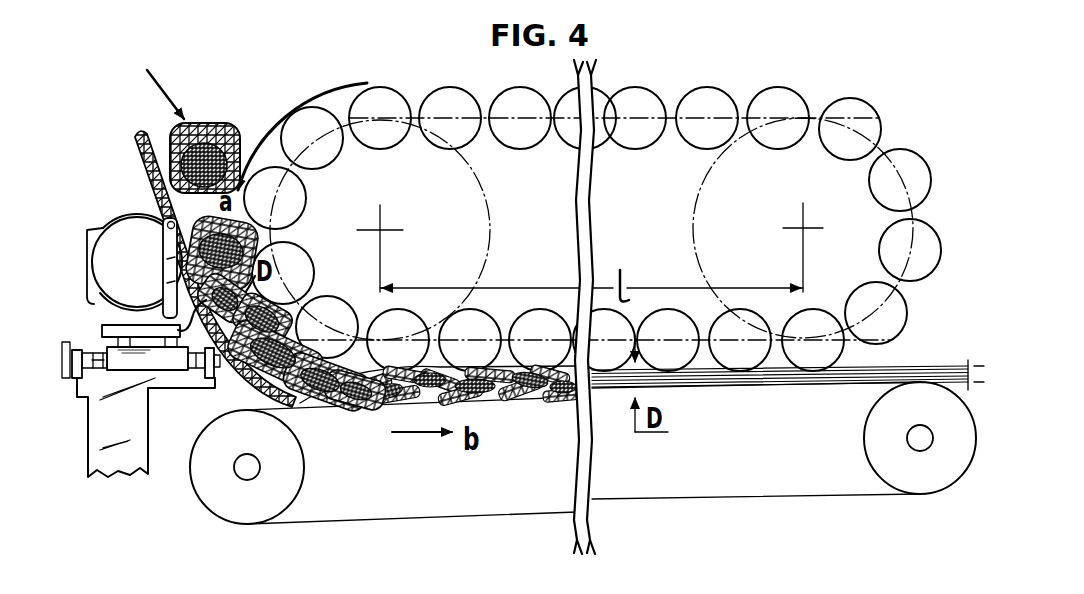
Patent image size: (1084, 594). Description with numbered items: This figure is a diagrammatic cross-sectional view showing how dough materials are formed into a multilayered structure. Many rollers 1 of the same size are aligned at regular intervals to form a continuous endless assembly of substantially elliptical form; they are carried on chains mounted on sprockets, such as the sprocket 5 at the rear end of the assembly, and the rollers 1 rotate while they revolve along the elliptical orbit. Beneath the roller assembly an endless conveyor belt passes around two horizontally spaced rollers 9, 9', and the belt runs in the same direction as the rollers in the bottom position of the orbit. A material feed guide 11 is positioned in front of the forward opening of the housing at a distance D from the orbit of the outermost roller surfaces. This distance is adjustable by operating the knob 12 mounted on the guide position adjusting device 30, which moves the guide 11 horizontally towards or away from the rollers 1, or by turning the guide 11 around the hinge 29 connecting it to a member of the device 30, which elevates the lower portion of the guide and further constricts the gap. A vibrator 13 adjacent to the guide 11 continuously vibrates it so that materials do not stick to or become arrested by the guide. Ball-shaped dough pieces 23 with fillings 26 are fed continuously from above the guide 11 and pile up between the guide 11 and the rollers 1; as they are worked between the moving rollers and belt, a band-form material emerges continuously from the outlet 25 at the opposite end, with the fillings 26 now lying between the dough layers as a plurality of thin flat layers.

The rollers 1 is at (684, 97).
The sprocket 5 is at (486, 190).
The roller 9 is at (245, 481).
The roller 9' is at (906, 438).
The material feed guide 11 is at (247, 372).
The knob 12 is at (67, 378).
The vibrator 13 is at (121, 247).
The dough pieces 23 is at (203, 124).
The outlet 25 is at (872, 360).
The fillings 26 is at (212, 150).
The hinge 29 is at (162, 209).
The guide position adjusting device 30 is at (92, 331).